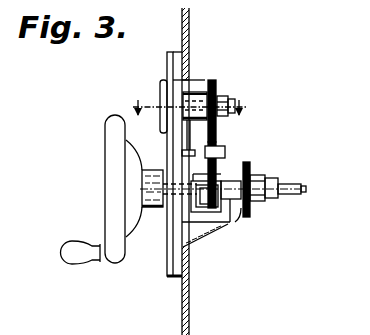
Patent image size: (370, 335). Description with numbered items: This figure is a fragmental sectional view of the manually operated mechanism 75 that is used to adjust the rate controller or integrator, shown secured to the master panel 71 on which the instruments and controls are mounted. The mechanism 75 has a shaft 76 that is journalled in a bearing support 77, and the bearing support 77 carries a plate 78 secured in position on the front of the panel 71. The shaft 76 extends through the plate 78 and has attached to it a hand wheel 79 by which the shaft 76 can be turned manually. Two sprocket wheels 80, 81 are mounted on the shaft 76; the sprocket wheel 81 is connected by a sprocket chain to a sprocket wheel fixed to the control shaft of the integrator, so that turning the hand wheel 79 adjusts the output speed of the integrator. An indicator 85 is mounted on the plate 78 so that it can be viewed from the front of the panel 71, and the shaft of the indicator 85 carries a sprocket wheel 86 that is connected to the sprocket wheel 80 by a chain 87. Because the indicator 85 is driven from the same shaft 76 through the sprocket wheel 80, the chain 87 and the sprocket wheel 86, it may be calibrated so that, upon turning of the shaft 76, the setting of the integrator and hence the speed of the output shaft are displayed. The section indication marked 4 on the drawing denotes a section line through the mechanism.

The master panel 71 is at (190, 26).
The manually operated mechanism 75 is at (207, 249).
The shaft 76 is at (300, 163).
The bearing support 77 is at (222, 229).
The plate 78 is at (165, 266).
The hand wheel 79 is at (104, 142).
The sprocket wheel 80 is at (232, 167).
The sprocket wheel 81 is at (258, 160).
The indicator 85 is at (155, 97).
The sprocket wheel 86 is at (221, 96).
The chain 87 is at (216, 134).
The section line 4- 4 is at (184, 105).